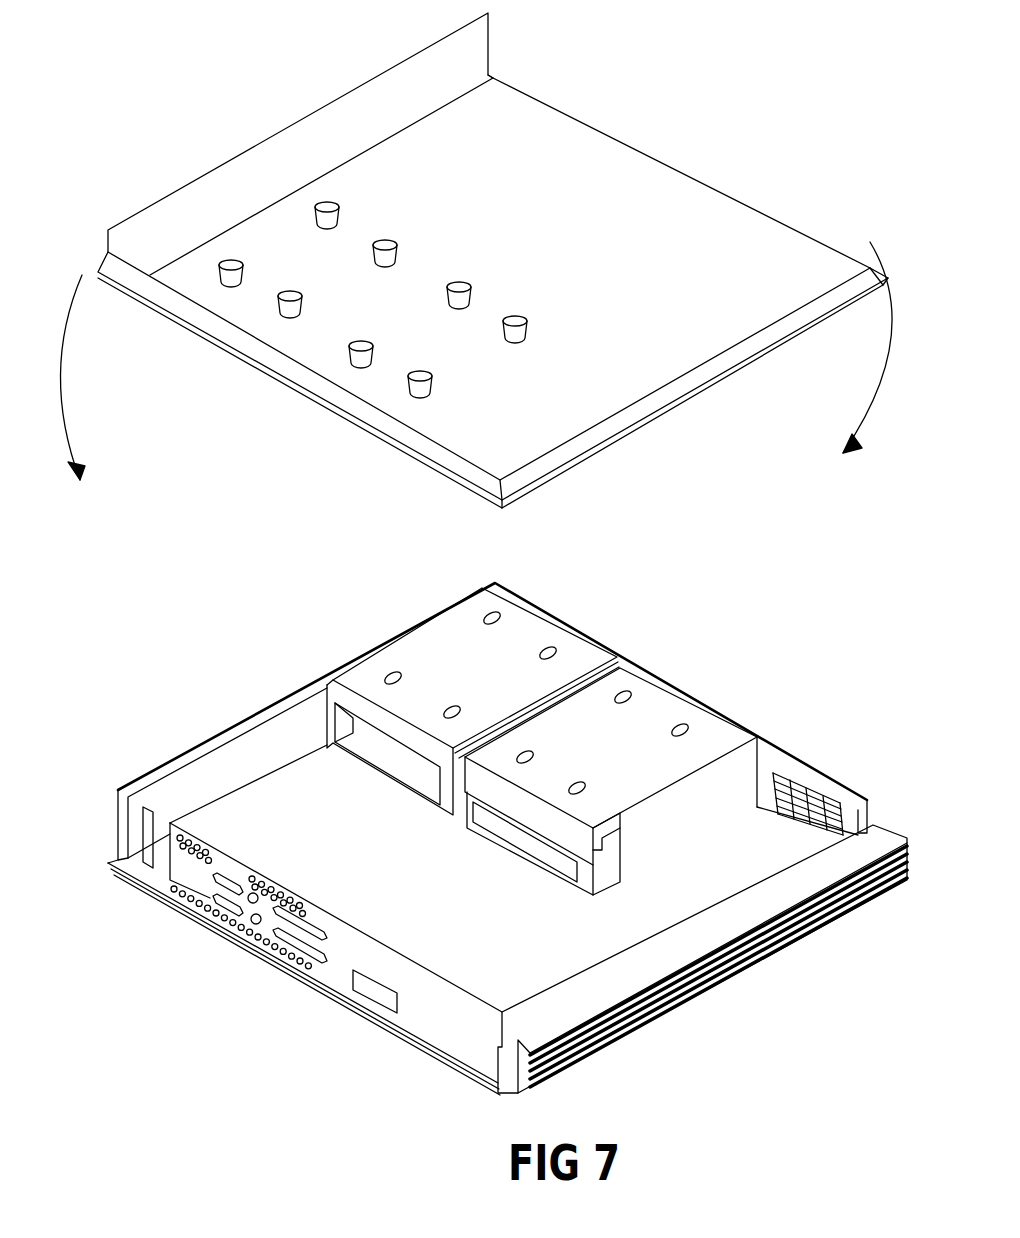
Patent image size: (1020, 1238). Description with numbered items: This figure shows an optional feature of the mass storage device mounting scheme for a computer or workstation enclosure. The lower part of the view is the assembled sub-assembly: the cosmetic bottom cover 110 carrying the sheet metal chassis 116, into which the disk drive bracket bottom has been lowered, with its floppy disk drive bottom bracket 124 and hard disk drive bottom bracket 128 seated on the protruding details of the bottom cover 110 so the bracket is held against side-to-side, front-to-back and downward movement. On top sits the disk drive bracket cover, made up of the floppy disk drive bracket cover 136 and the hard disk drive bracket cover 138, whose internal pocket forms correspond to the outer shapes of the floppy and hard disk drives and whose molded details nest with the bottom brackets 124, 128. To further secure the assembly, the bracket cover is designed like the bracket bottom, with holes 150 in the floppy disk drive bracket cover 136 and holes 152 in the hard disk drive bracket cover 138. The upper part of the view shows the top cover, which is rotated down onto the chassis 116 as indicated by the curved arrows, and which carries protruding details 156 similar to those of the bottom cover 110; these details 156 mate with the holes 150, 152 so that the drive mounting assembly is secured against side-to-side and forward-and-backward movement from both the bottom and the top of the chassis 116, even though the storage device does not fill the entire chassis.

The bottom cover 110 is at (740, 968).
The sheet metal chassis 116 is at (300, 688).
The floppy disk drive bottom bracket 124 is at (395, 760).
The hard disk drive bottom bracket 128 is at (527, 840).
The floppy disk drive bracket cover 136 is at (567, 640).
The hard disk drive bracket cover 138 is at (733, 728).
The holes 150 is at (374, 244).
The holes 152 is at (671, 731).
The protruding details 156 is at (505, 322).